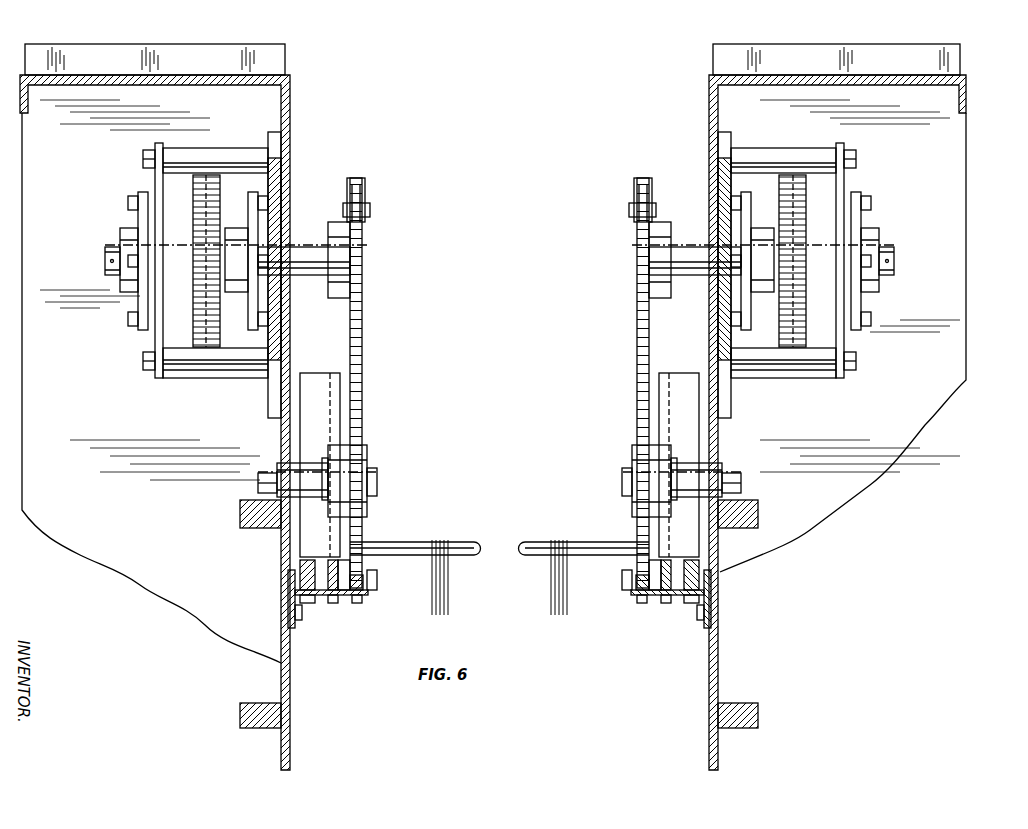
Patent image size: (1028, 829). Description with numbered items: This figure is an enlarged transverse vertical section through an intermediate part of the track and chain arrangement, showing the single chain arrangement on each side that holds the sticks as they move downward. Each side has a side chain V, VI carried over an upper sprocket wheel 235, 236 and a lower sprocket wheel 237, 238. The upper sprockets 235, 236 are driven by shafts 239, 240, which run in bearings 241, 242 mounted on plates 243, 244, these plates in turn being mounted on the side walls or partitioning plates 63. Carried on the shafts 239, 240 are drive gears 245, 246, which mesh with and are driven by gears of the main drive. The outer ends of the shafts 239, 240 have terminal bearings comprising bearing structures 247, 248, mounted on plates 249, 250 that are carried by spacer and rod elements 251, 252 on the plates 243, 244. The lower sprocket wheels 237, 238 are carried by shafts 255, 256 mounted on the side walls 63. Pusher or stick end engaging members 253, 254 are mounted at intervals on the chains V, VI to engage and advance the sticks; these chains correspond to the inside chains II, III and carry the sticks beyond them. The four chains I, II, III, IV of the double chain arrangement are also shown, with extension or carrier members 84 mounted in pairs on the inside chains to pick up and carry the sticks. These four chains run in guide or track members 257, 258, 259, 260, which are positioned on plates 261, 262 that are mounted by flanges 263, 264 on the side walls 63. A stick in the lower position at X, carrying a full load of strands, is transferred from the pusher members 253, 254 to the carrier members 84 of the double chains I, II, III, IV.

The separator or partitioning plate 63 is at (288, 133).
The extension member or carrier member 84 is at (352, 545).
The upper sprocket wheel 235 is at (362, 305).
The upper sprocket wheel 236 is at (636, 288).
The lower sprocket wheel 237 is at (360, 450).
The lower sprocket wheel 238 is at (632, 450).
The shaft 239 is at (300, 248).
The shaft 240 is at (690, 252).
The bearing 241 is at (262, 287).
The bearing 242 is at (735, 309).
The plate 243 is at (268, 395).
The plate 244 is at (731, 385).
The drive gear 245 is at (222, 180).
The drive gear 246 is at (805, 215).
The bearing structure 247 is at (125, 300).
The bearing structure 248 is at (880, 222).
The plate 249 is at (155, 180).
The plate 250 is at (845, 382).
The spacer and rod element 251 is at (183, 160).
The spacer and rod element 252 is at (783, 160).
The pusher or stick end engaging member 253 is at (366, 186).
The pusher or stick end engaging member 254 is at (634, 186).
The shaft 255 is at (310, 470).
The shaft 256 is at (700, 478).
The guide member or track member 257 is at (335, 597).
The guide member or track member 258 is at (357, 603).
The guide member or track member 259 is at (648, 597).
The guide member or track member 260 is at (666, 597).
The plate 261 is at (370, 592).
The plate 262 is at (638, 592).
The flange 263 is at (298, 628).
The flange 264 is at (704, 628).
The chain I is at (320, 597).
The chain II is at (368, 582).
The chain III is at (632, 582).
The chain IV is at (690, 575).
The side chain V is at (362, 352).
The side chain VI is at (637, 340).
The lower stick position X is at (512, 554).